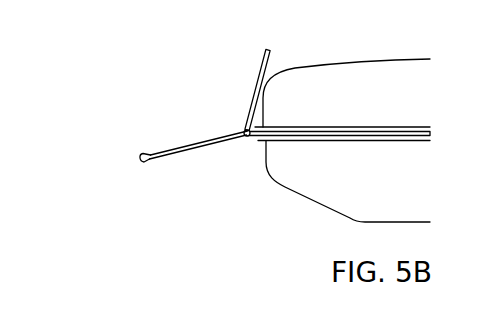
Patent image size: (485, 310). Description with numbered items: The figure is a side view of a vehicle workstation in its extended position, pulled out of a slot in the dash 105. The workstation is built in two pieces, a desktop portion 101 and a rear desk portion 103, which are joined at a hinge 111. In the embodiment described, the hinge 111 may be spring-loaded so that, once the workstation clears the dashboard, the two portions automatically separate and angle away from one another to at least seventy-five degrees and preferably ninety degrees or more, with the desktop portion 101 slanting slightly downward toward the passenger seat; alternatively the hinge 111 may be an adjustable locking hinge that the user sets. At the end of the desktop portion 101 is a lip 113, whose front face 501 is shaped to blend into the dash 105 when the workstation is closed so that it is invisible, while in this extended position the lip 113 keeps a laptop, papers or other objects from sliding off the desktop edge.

The desktop portion 101 is at (182, 150).
The rear desk portion 103 is at (255, 76).
The dash 105 is at (322, 112).
The hinge 111 is at (246, 137).
The lip 113 is at (149, 163).
The front face 501 is at (139, 159).